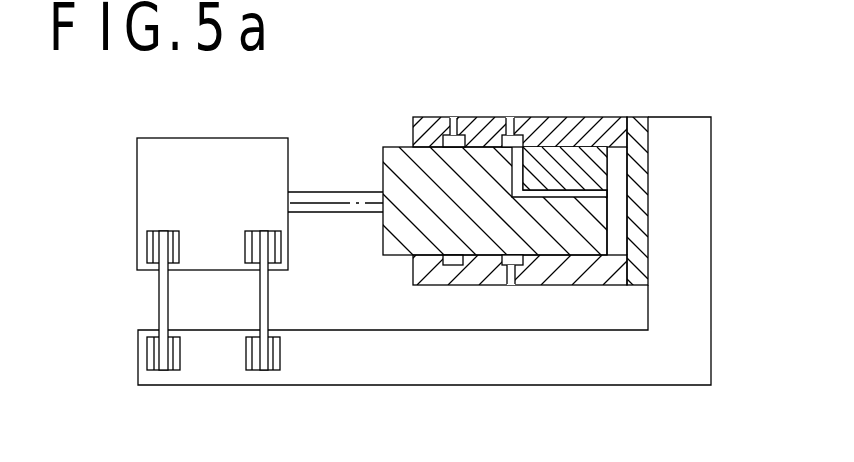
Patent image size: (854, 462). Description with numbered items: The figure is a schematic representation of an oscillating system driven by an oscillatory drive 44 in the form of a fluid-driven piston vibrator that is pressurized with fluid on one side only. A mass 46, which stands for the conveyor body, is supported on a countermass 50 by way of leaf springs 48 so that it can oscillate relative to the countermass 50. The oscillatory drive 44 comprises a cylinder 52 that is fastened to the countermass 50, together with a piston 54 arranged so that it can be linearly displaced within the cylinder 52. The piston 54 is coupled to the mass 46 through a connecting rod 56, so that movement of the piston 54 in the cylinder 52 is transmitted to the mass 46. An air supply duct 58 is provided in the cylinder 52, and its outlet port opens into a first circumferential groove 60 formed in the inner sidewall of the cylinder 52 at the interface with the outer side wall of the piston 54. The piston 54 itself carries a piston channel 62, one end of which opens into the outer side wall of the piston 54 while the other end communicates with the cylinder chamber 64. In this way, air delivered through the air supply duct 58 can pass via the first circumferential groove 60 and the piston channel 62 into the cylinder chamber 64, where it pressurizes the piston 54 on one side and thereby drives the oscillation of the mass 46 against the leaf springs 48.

The oscillatory drive 44 is at (618, 96).
The mass 46 is at (214, 172).
The leaf springs 48 is at (160, 300).
The countermass 50 is at (695, 315).
The cylinder 52 is at (648, 138).
The piston 54 is at (400, 160).
The connecting rod 56 is at (342, 196).
The air supply duct 58 is at (511, 292).
The first circumferential groove 60 is at (511, 142).
The piston channel 62 is at (552, 190).
The cylinder chamber 64 is at (617, 198).